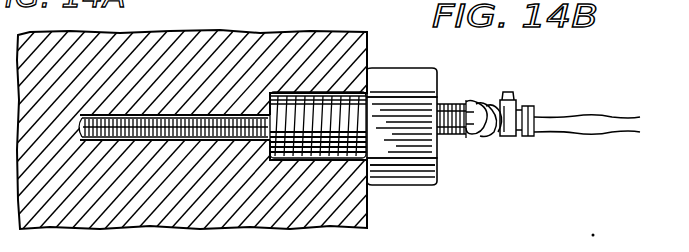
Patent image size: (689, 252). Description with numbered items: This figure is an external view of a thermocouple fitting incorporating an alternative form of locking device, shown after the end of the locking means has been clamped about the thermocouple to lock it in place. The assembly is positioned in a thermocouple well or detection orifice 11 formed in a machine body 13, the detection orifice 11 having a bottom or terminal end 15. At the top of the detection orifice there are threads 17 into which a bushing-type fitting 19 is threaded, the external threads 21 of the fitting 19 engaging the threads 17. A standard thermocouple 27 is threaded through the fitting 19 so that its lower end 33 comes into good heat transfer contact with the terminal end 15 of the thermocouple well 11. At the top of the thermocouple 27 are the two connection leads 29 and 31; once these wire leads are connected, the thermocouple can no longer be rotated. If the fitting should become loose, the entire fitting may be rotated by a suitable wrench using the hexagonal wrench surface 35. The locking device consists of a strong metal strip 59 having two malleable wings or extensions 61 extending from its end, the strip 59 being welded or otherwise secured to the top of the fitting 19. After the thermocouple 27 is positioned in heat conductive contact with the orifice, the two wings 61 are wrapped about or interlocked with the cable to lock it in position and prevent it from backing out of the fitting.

The detection orifice 11 is at (222, 115).
The machine body 13 is at (190, 38).
The terminal end 15 is at (84, 138).
The threads 17 is at (318, 93).
The bushing-type fitting 19 is at (393, 192).
The external threads 21 is at (288, 160).
The thermocouple 27 is at (510, 150).
The connection lead 29 is at (598, 117).
The connection lead 31 is at (584, 134).
The lower end 33 is at (80, 118).
The hexagonal wrench surface 35 is at (427, 174).
The metal strip 59 is at (450, 104).
The wings 61 is at (512, 100).